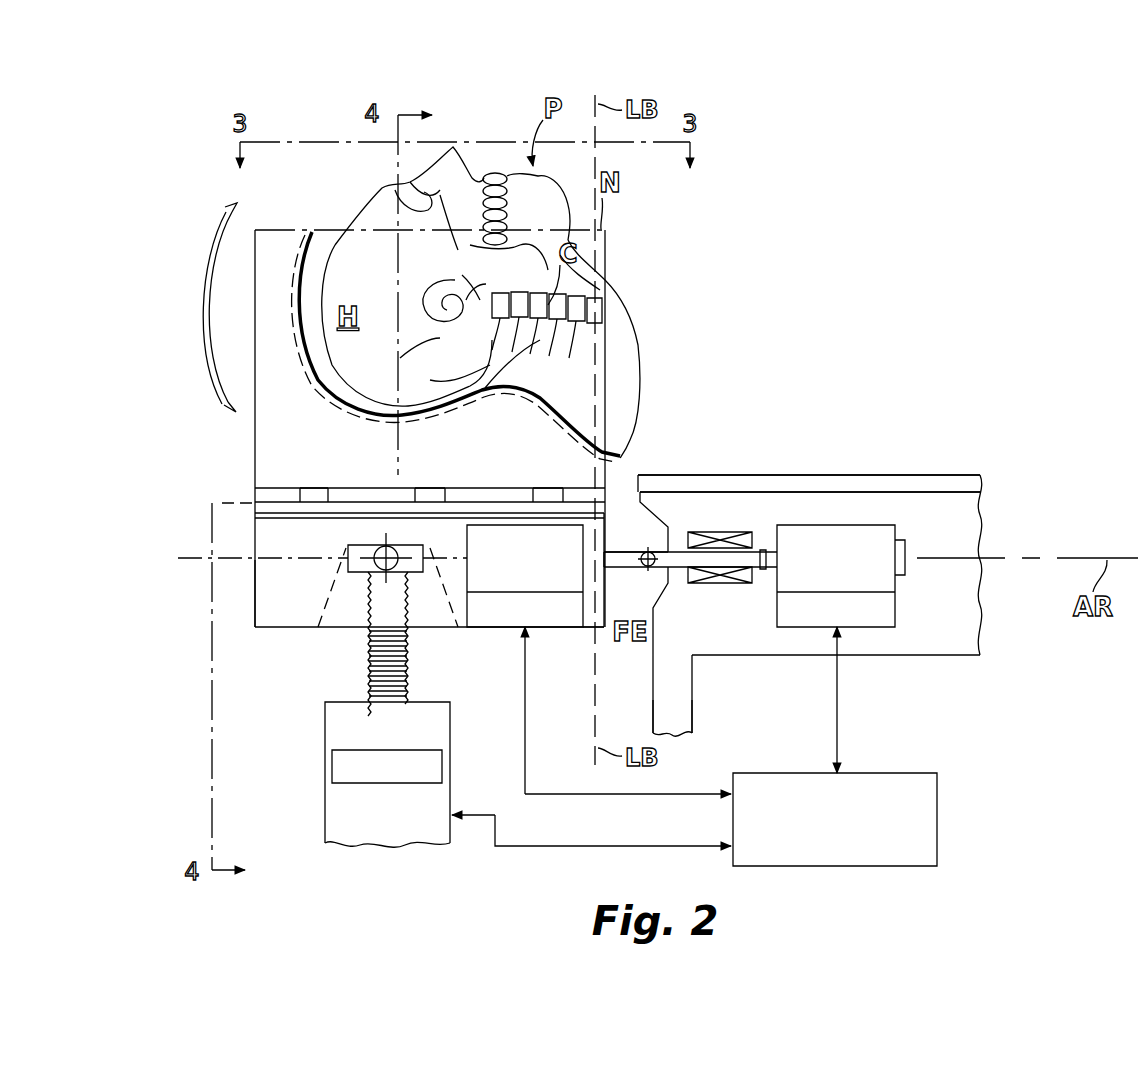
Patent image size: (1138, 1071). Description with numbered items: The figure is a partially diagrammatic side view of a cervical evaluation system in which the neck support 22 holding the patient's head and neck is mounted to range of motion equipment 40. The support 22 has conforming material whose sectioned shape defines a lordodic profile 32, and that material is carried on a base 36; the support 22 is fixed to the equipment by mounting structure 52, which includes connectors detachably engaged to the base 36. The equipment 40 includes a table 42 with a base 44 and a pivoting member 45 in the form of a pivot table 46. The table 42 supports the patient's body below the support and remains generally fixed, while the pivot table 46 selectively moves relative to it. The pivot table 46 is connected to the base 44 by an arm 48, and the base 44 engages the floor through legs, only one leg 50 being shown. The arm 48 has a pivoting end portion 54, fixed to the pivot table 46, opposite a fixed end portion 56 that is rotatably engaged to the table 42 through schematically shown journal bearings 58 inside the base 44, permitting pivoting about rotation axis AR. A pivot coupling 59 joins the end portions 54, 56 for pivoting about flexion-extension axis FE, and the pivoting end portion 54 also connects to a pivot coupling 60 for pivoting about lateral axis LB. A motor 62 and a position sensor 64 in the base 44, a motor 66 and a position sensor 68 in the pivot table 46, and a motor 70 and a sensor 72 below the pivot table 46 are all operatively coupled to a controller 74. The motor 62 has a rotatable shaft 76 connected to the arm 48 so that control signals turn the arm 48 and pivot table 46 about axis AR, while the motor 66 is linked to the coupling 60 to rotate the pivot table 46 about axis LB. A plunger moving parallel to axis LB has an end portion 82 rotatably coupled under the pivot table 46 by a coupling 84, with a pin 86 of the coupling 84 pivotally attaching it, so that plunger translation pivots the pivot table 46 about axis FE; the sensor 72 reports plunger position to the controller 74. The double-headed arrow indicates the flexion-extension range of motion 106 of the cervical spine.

The neck support 22 is at (280, 231).
The lordodic profile 32 is at (625, 434).
The base 36 is at (258, 490).
The range of motion equipment 40 is at (268, 630).
The table 42 is at (886, 474).
The base 44 is at (708, 657).
The pivoting member 45 is at (255, 540).
The pivot table 46 is at (255, 595).
The arm 48 is at (622, 548).
The leg 50 is at (695, 680).
The mounting structure 52 is at (530, 488).
The pivoting end portion 54 is at (598, 617).
The fixed end portion 56 is at (766, 590).
The journal bearings 58 is at (700, 531).
The pivot coupling 59 is at (650, 548).
The pivot coupling 60 is at (590, 632).
The motor 62 is at (841, 576).
The position sensor 64 is at (897, 607).
The motor 66 is at (467, 548).
The position sensor 68 is at (467, 608).
The motor 70 is at (452, 795).
The sensor 72 is at (376, 749).
The controller 74 is at (835, 819).
The rotatable shaft 76 is at (764, 548).
The end portion 82 is at (362, 606).
The coupling 84 is at (345, 570).
The pin 86 is at (376, 550).
The flexion-extension range of motion 106 is at (206, 300).